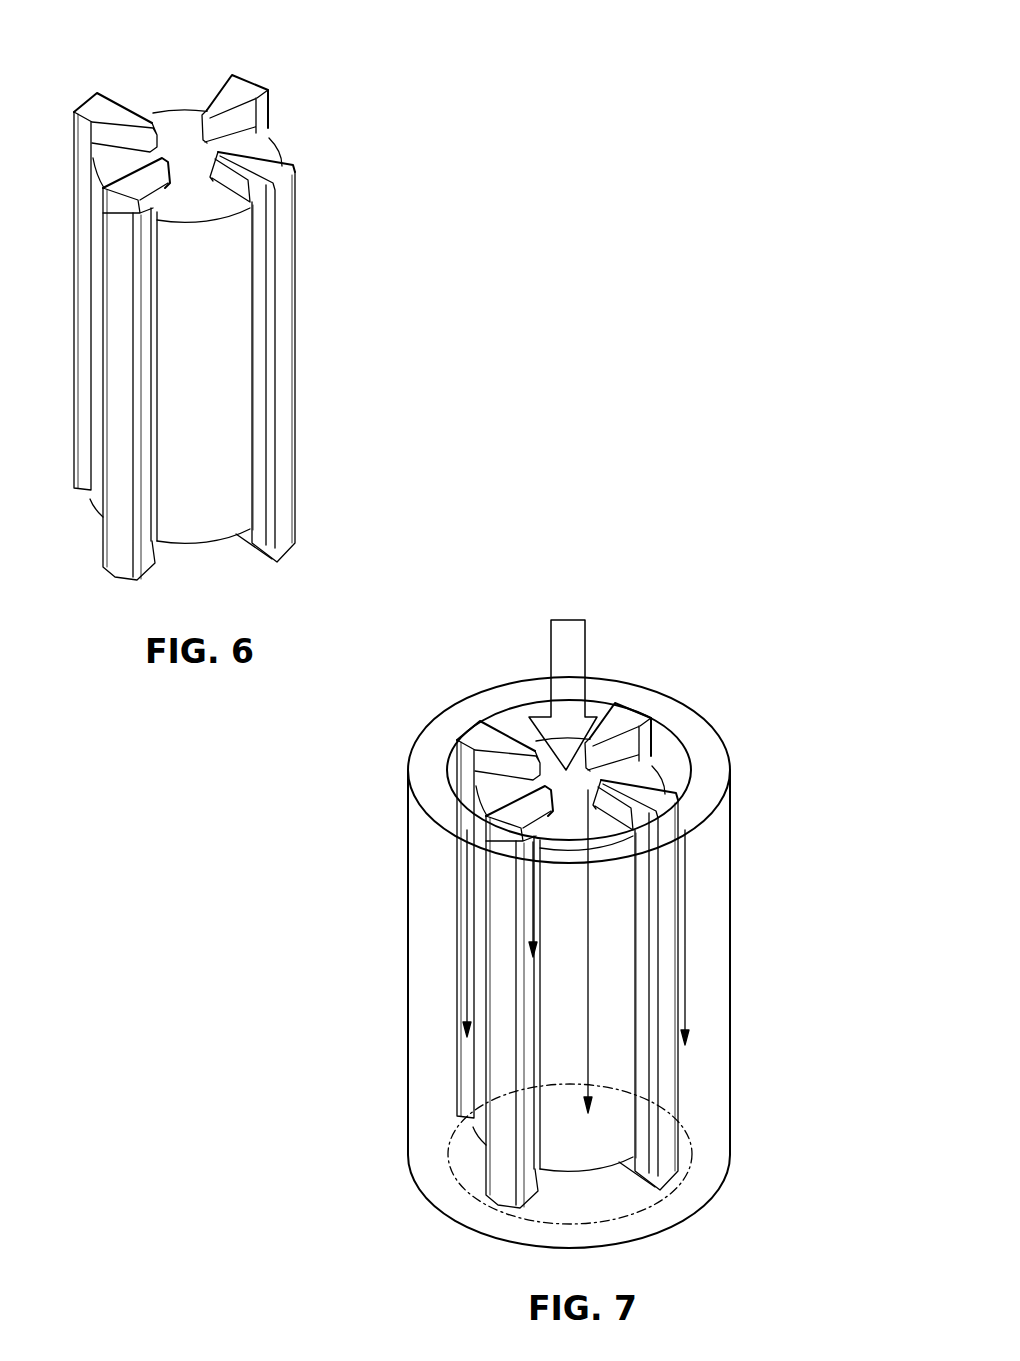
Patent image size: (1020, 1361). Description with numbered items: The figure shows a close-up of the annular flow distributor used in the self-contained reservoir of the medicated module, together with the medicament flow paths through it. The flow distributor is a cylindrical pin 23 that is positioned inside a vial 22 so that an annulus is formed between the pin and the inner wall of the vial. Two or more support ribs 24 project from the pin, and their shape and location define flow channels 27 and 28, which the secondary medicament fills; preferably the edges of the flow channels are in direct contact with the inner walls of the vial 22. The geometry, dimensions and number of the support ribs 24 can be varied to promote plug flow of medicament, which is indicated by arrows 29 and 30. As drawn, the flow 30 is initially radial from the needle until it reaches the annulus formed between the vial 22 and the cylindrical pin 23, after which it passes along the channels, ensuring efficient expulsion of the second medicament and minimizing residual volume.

In FIG. 7, the vial 22 is at (733, 925).
In FIG. 6, the cylindrical pin 23 is at (267, 303).
In FIG. 7, the cylindrical pin 23 is at (457, 1063).
In FIG. 6, the support ribs 24 is at (285, 217).
In FIG. 6, the flow channel 27 is at (160, 108).
In FIG. 6, the flow channel 28 is at (204, 372).
In FIG. 7, the arrow 29 is at (576, 620).
In FIG. 7, the flow 30 is at (668, 768).